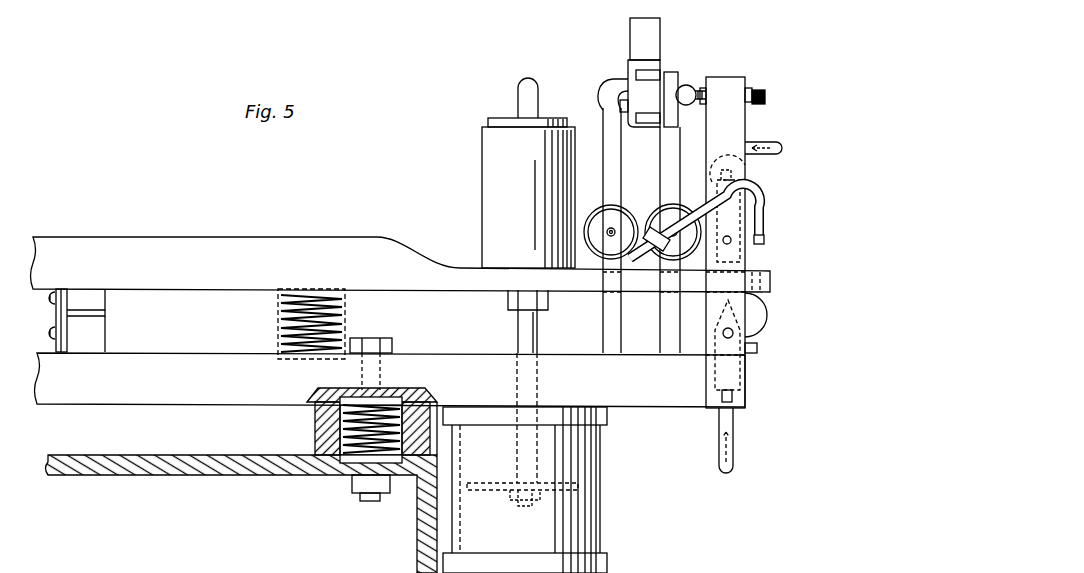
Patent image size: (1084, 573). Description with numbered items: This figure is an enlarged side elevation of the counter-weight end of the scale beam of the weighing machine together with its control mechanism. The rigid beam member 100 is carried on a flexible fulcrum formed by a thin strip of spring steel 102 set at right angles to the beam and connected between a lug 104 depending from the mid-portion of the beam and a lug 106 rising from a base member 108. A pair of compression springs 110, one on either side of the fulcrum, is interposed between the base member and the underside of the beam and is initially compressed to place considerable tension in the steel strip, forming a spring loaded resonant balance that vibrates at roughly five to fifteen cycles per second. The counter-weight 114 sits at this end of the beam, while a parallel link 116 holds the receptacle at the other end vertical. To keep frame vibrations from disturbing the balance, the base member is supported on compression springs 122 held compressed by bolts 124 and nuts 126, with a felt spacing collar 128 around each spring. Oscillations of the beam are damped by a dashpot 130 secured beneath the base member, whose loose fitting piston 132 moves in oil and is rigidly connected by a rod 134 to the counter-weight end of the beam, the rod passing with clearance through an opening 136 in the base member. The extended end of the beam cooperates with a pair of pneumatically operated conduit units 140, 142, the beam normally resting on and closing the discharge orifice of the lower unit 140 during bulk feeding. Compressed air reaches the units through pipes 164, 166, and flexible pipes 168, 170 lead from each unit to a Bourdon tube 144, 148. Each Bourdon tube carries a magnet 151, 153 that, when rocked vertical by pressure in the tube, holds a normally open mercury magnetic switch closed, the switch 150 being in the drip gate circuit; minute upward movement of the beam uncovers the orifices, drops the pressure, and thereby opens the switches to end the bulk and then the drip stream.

The beam member 100 is at (383, 247).
The spring steel strip 102 is at (67, 314).
The lug 104 is at (97, 300).
The lug 106 is at (92, 339).
The base member 108 is at (390, 380).
The compression springs 110 is at (283, 330).
The counter-weight 114 is at (497, 166).
The parallel link 116 is at (657, 569).
The compression springs 122 is at (388, 398).
The bolts 124 is at (382, 336).
The nuts 126 is at (348, 485).
The felt spacing collar 128 is at (314, 436).
The dashpot 130 is at (601, 470).
The piston 132 is at (493, 493).
The rod 134 is at (520, 338).
The opening 136 is at (542, 389).
The pneumatically operated conduit unit 140 is at (745, 390).
The pneumatically operated conduit unit 142 is at (746, 186).
The Bourdon tube 144 is at (664, 216).
The Bourdon tube 148 is at (622, 205).
The magnetic switch 150 is at (652, 35).
The magnet 151 is at (688, 84).
The magnet 153 is at (606, 88).
The pipe 164 is at (731, 470).
The pipe 166 is at (766, 142).
The flexible pipe 168 is at (745, 326).
The flexible pipe 170 is at (701, 210).